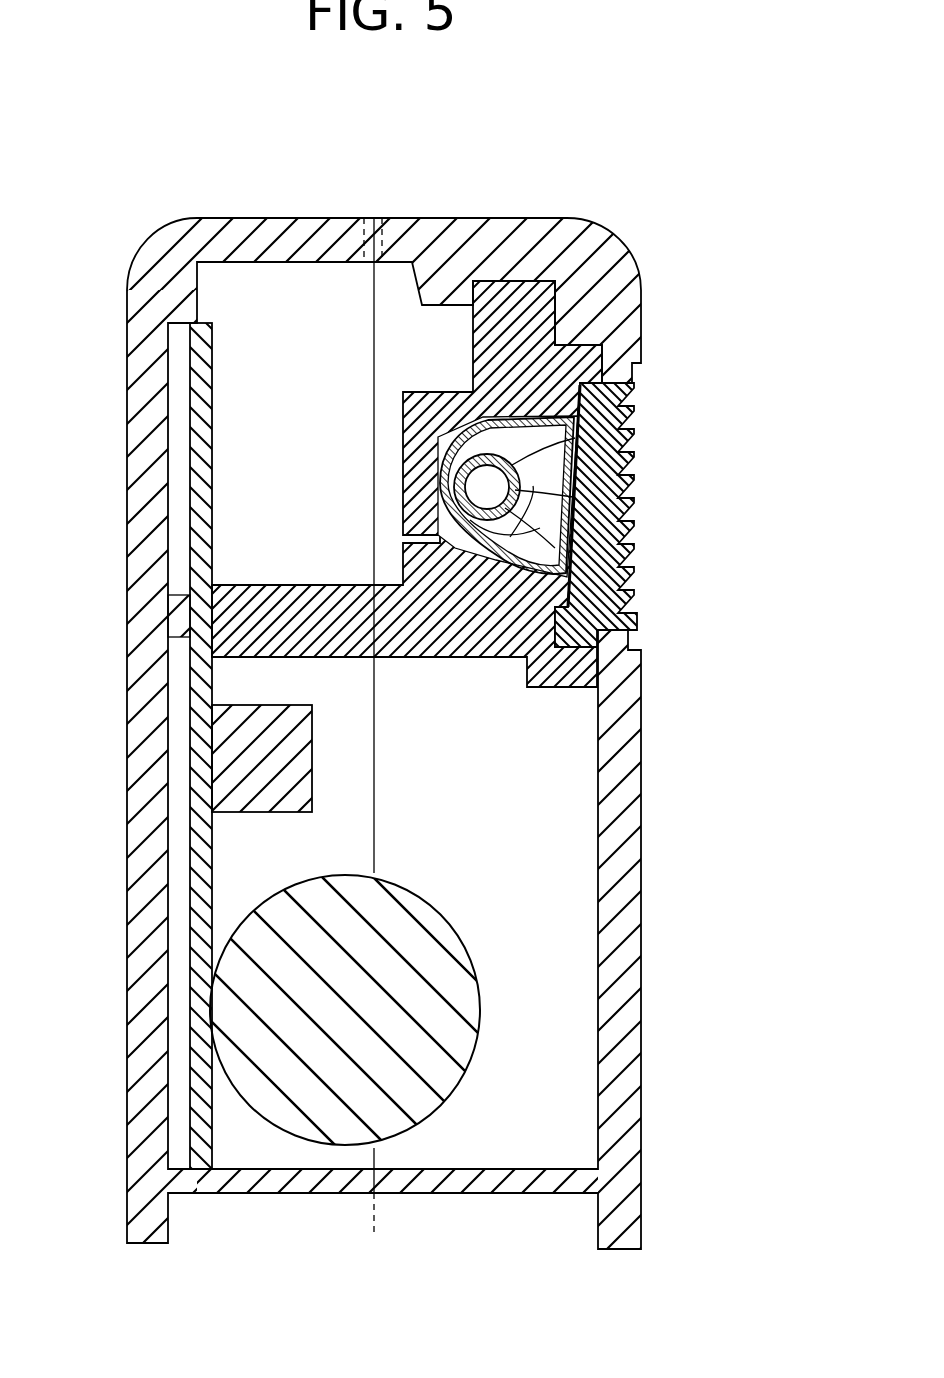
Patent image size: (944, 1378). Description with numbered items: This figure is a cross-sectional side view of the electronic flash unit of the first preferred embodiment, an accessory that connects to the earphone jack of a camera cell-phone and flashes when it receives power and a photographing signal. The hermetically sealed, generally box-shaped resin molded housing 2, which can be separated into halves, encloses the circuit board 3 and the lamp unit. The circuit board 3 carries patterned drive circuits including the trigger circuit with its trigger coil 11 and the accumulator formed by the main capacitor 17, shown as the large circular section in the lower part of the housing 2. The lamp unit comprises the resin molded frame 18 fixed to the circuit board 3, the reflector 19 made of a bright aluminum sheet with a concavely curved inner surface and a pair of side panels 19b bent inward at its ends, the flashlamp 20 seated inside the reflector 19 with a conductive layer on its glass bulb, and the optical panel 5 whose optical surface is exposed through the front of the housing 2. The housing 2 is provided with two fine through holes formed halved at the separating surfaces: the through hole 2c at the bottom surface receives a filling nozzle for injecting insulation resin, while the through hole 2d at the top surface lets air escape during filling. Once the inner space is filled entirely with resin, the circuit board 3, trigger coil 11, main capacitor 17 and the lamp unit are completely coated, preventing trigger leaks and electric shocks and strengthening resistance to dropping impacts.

The housing 2 is at (295, 218).
The through hole 2d is at (381, 218).
The through hole 2c is at (377, 1233).
The circuit board 3 is at (185, 513).
The optical panel 5 is at (620, 580).
The trigger coil 11 is at (225, 776).
The main capacitor 17 is at (312, 1142).
The resin molded frame 18 is at (553, 690).
The reflector 19 is at (565, 468).
The side panels 19b is at (540, 535).
The flashlamp 20 is at (489, 512).